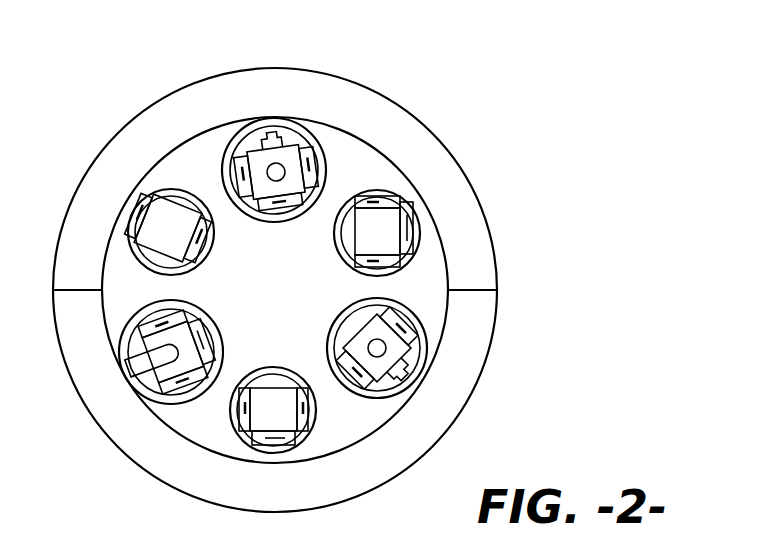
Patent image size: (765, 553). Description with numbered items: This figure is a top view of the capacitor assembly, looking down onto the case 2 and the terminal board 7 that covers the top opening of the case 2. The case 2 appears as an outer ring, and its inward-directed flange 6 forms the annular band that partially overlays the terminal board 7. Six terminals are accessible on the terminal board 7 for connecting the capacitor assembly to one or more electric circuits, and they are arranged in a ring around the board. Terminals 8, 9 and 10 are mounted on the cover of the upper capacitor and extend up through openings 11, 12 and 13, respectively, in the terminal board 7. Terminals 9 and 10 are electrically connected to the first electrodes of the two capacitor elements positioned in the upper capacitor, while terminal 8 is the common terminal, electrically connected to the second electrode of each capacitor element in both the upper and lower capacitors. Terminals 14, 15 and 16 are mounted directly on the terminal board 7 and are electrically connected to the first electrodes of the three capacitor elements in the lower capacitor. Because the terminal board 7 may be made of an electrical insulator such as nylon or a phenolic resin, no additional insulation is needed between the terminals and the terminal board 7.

The case 2 is at (281, 284).
The flange 6 is at (80, 222).
The terminal board 7 is at (350, 160).
The terminal 8 is at (168, 367).
The terminal 9 is at (285, 153).
The terminal 10 is at (393, 350).
The opening 11 is at (145, 410).
The opening 12 is at (244, 126).
The opening 13 is at (436, 354).
The terminal 14 is at (283, 415).
The terminal 15 is at (170, 223).
The terminal 16 is at (383, 232).